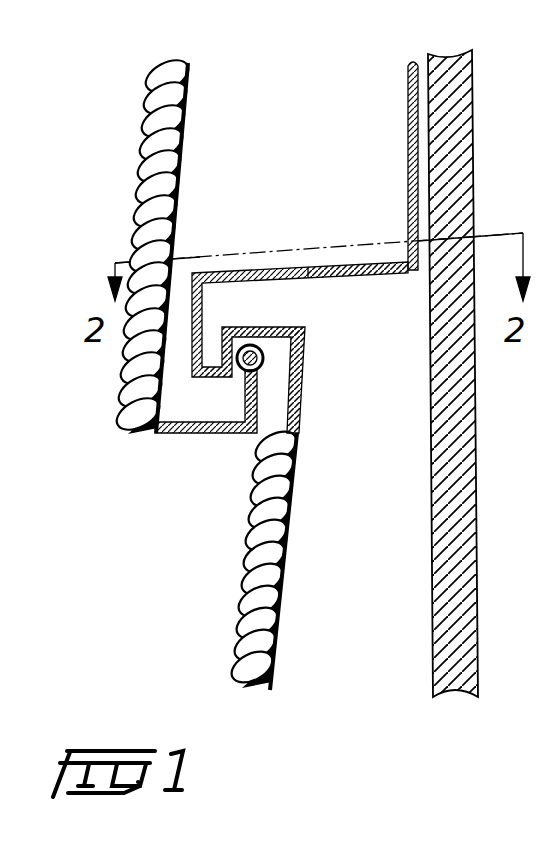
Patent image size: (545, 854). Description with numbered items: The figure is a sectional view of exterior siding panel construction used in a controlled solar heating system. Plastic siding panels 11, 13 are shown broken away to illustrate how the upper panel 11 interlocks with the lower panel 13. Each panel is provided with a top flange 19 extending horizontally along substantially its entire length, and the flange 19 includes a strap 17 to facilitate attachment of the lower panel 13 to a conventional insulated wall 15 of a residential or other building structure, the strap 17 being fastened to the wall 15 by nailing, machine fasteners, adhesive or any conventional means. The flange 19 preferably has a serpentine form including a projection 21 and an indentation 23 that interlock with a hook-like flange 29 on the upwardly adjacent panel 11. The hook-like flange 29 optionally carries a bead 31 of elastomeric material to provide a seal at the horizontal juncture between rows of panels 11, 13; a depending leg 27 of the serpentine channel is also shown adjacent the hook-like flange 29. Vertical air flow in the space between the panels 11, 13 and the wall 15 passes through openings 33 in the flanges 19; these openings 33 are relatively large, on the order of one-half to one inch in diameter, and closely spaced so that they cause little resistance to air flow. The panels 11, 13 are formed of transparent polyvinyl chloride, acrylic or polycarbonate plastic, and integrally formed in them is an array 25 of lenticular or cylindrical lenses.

The upper siding panel 11 is at (183, 106).
The lower siding panel 13 is at (292, 478).
The insulated wall 15 is at (433, 300).
The strap 17 is at (408, 98).
The top flange 19 is at (232, 275).
The projection 21 is at (218, 378).
The indentation 23 is at (236, 327).
The array of lenses 25 is at (152, 94).
The depending leg 27 is at (300, 388).
The hook-like flange 29 is at (198, 434).
The bead 31 is at (246, 380).
The openings 33 is at (318, 279).